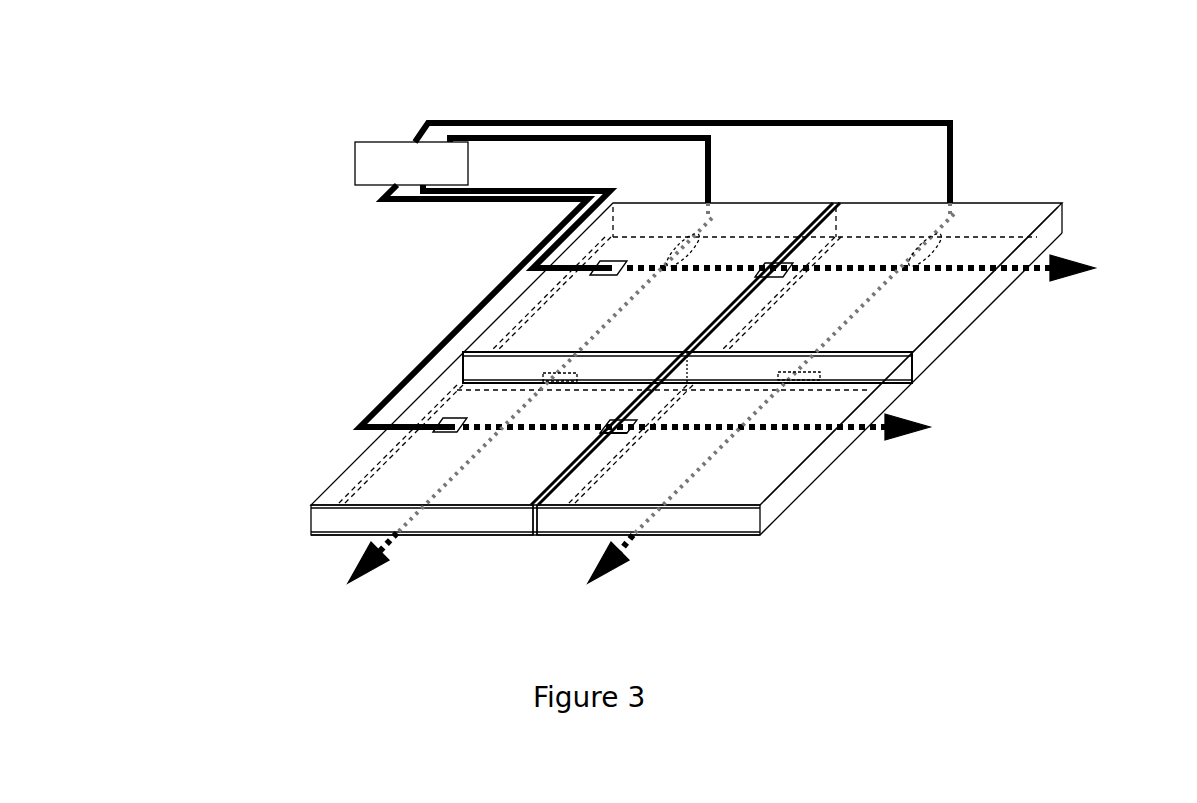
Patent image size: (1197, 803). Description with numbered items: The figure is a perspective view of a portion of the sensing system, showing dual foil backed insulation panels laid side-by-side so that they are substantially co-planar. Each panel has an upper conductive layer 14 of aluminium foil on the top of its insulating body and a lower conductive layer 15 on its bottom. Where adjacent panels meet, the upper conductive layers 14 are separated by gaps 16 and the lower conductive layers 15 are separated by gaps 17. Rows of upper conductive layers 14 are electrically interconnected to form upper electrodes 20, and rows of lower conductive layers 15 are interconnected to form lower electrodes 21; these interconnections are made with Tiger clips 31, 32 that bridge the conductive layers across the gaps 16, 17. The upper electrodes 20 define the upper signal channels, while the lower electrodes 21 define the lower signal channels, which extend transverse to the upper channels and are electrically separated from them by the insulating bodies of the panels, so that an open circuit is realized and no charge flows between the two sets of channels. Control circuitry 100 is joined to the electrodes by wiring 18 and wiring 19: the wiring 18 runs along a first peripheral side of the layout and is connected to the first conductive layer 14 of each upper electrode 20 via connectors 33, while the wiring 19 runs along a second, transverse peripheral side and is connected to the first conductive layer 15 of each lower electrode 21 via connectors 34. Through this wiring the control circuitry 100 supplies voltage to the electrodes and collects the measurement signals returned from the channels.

The upper conductive layer 14 is at (1035, 233).
The lower conductive layer 15 is at (520, 537).
The gap 16 is at (532, 510).
The gap 17 is at (913, 381).
The wiring 18 is at (530, 272).
The wiring 19 is at (622, 132).
The upper electrode 20 is at (1002, 303).
The lower electrode 21 is at (448, 548).
The Tiger clip 31 is at (593, 435).
The Tiger clip 32 is at (547, 380).
The connector 33 is at (430, 437).
The connector 34 is at (930, 237).
The control circuitry 100 is at (411, 163).